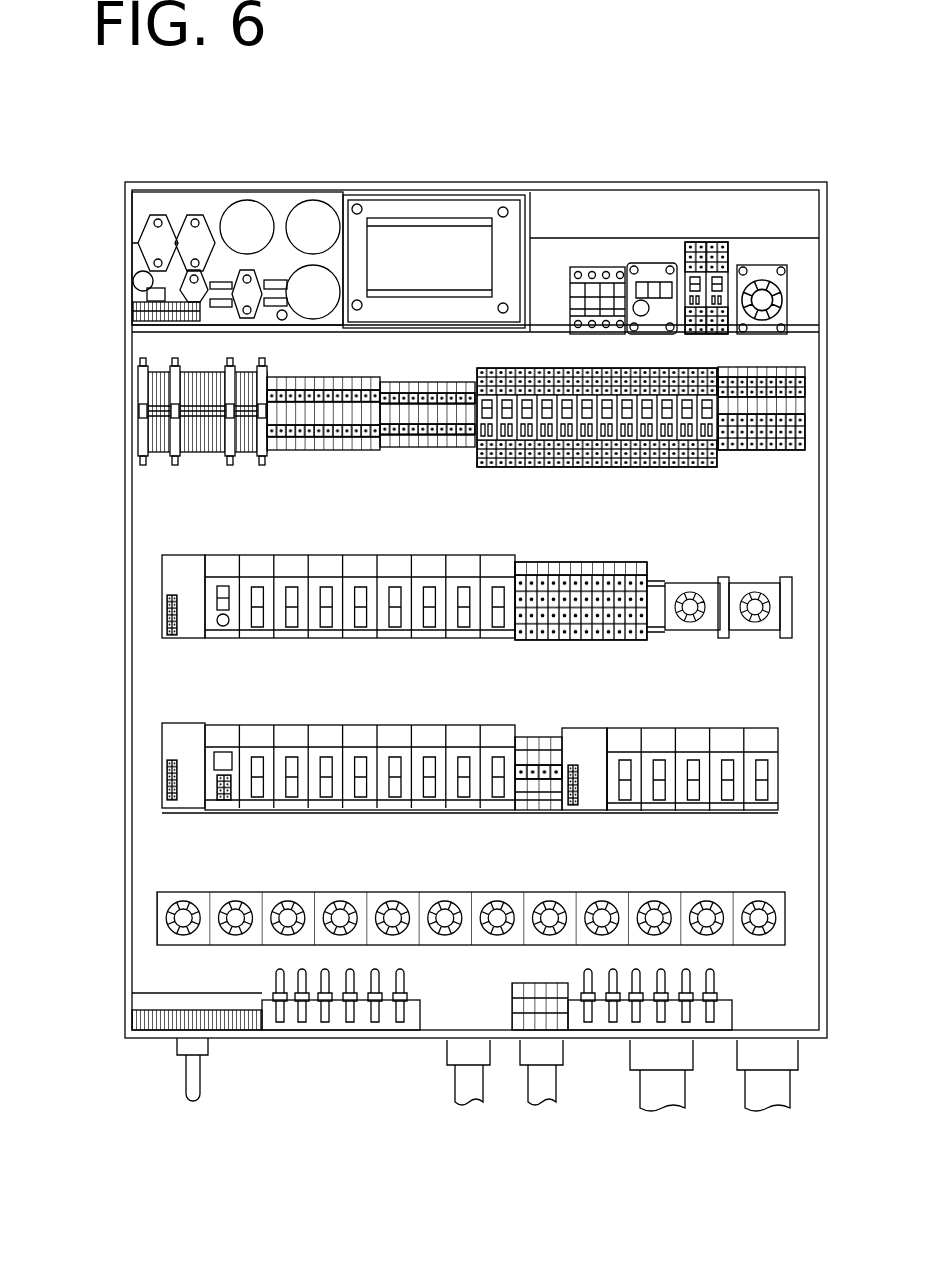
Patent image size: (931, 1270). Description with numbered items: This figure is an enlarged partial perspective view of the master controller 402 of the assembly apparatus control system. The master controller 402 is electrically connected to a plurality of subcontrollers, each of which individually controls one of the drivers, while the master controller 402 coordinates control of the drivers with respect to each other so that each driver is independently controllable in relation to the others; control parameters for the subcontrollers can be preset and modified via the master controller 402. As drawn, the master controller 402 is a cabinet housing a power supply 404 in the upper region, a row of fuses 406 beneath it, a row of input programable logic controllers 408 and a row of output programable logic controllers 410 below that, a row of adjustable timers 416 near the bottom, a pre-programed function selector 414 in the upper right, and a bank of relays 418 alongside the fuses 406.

The master controller 402 is at (106, 244).
The power supply 404 is at (210, 205).
The fuses 406 is at (200, 426).
The input programable logic controllers 408 is at (188, 568).
The output programable logic controllers 410 is at (183, 735).
The pre-programed function selector 414 is at (766, 268).
The adjustable timers 416 is at (355, 898).
The relays 418 is at (650, 440).